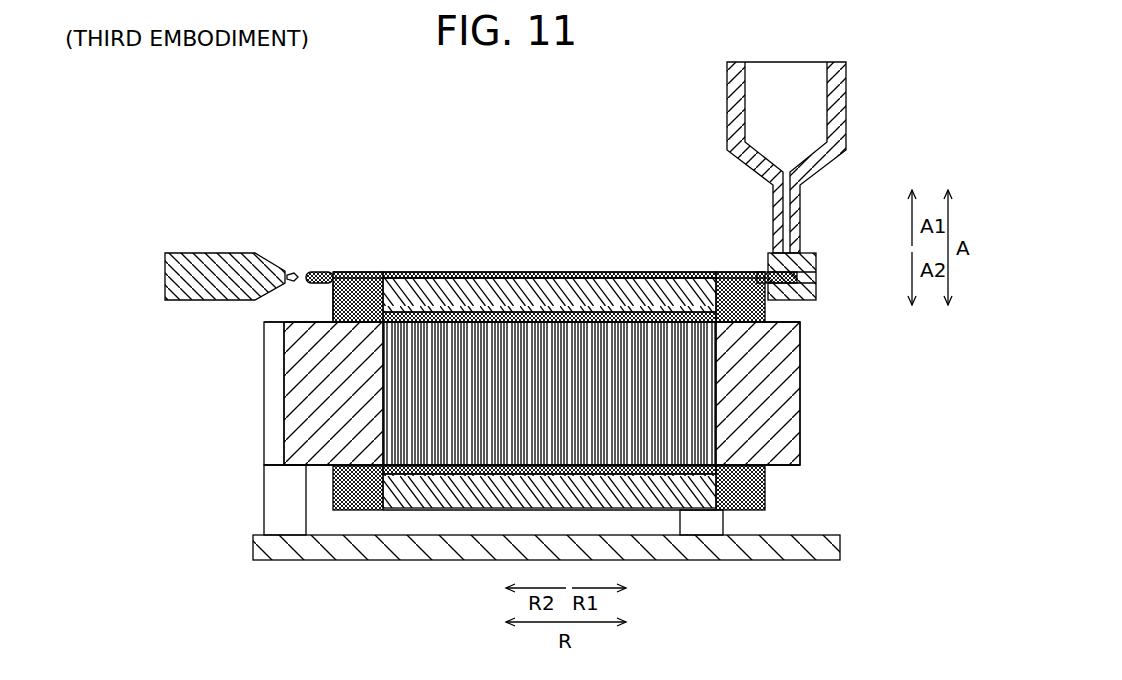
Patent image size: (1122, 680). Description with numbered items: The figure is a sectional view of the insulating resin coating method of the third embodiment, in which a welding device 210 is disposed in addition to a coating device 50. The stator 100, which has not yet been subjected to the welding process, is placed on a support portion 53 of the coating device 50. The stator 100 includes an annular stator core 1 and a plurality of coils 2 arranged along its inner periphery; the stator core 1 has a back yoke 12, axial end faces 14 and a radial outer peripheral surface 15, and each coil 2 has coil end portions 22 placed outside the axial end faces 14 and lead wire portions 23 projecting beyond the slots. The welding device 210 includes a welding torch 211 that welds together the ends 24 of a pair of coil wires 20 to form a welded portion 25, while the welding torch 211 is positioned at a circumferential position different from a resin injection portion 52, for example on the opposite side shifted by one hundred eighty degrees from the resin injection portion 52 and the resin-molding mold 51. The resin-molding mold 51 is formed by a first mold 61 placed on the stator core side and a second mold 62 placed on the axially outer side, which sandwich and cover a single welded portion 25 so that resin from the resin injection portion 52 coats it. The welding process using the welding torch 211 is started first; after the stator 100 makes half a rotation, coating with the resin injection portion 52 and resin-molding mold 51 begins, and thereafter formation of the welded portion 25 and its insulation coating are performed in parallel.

The stator core 1 is at (808, 368).
The coil 2 is at (598, 268).
The coil wire 20 is at (549, 491).
The back yoke 12 is at (807, 420).
The axial end face 14 is at (797, 323).
The radial outer peripheral surface 15 is at (797, 397).
The coil end portion 22 is at (567, 266).
The lead wire portion 23 is at (336, 270).
The end 24 is at (329, 262).
The welded portion 25 is at (316, 272).
The coating device 50 is at (783, 181).
The resin-molding mold 51 is at (829, 250).
The resin injection portion 52 is at (721, 153).
The support portion 53 is at (268, 518).
The first mold 61 is at (818, 292).
The second mold 62 is at (818, 269).
The stator 100 is at (468, 206).
The welding device 210 is at (180, 237).
The welding torch 211 is at (165, 277).